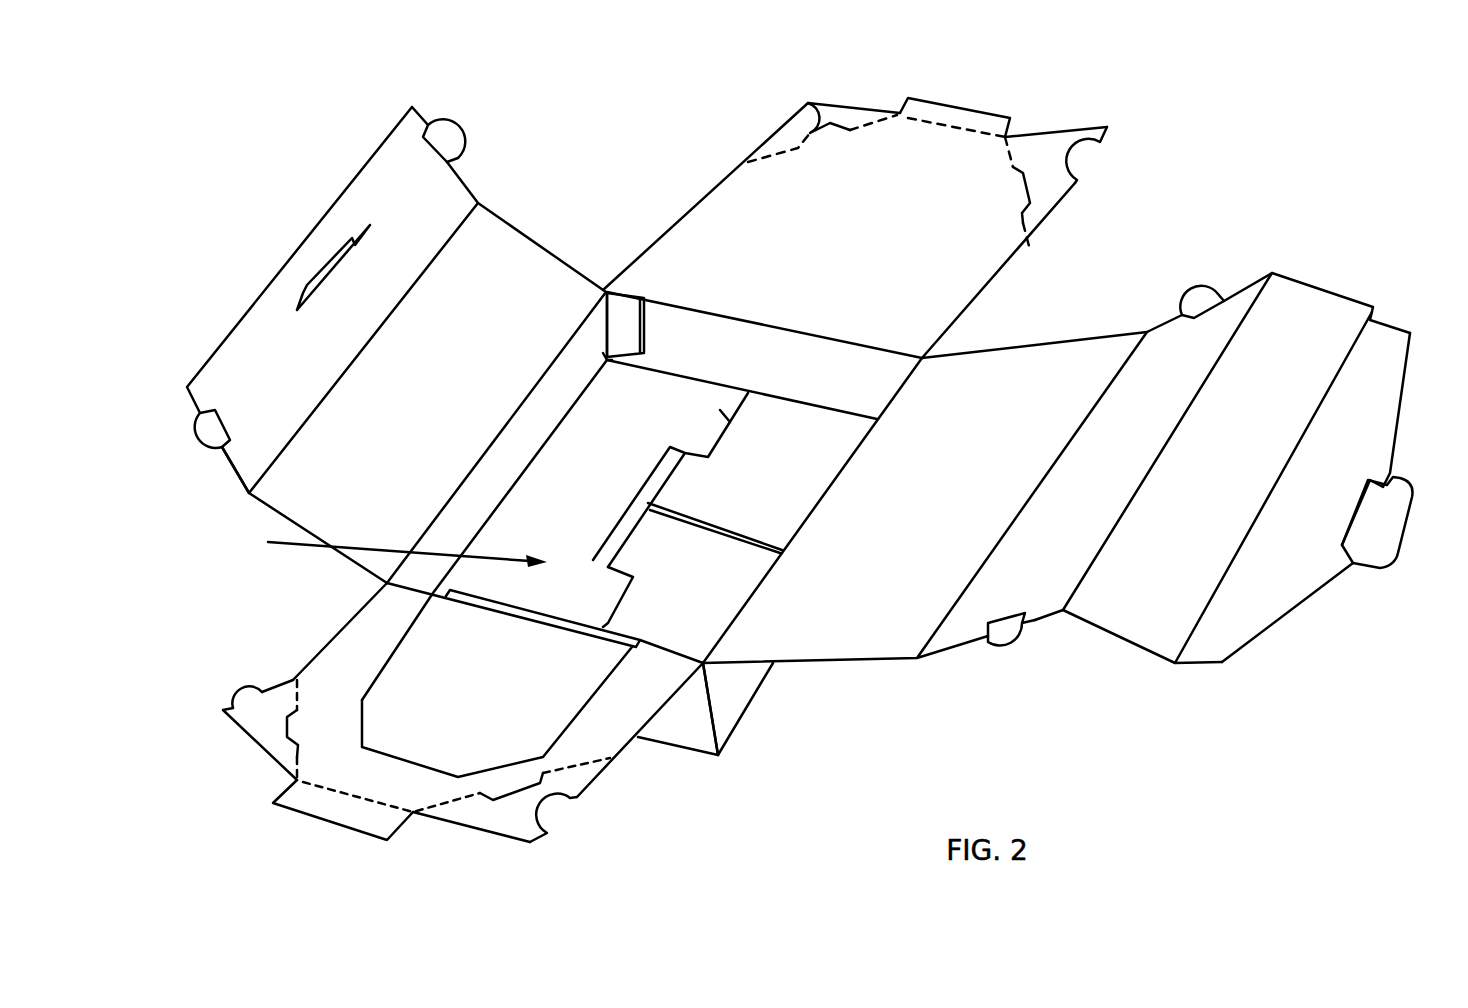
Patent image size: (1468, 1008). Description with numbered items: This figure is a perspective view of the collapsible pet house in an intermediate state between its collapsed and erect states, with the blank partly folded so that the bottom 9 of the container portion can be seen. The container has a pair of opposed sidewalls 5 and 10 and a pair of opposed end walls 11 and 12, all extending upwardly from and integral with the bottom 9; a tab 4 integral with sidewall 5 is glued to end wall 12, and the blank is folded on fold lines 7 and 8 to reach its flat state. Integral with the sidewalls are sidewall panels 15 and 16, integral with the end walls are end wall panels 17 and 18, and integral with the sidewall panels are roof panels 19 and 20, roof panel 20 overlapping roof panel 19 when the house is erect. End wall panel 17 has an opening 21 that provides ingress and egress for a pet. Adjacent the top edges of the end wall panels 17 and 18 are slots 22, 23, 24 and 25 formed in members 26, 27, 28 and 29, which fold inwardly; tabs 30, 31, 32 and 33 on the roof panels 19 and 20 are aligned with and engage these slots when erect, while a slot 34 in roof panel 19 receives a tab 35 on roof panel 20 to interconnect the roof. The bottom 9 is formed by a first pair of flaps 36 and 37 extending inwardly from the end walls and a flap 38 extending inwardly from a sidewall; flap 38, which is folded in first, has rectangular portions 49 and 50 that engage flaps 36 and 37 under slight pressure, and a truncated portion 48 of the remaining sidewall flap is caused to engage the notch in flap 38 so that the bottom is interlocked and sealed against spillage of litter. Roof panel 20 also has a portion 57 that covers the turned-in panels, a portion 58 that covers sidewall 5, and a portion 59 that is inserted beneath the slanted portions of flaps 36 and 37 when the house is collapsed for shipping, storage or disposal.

The tab 4 is at (627, 323).
The sidewall 5 is at (602, 360).
The fold line 7 is at (708, 717).
The fold line 8 is at (604, 340).
The bottom 9 is at (397, 546).
The sidewall 10 is at (752, 680).
The end wall 11 is at (672, 715).
The end wall 12 is at (872, 375).
The sidewall panel 15 is at (1035, 360).
The sidewall panel 16 is at (511, 242).
The end wall panel 17 is at (595, 748).
The end wall panel 18 is at (725, 227).
The roof panel 19 is at (248, 465).
The roof panel 20 is at (1268, 255).
The opening 21 is at (435, 742).
The slot 22 is at (252, 737).
The slot 23 is at (502, 797).
The slot 24 is at (1027, 187).
The slot 25 is at (808, 103).
The member 26 is at (280, 708).
The member 27 is at (530, 823).
The member 28 is at (1045, 143).
The member 29 is at (833, 110).
The tab 30 is at (443, 143).
The tab 31 is at (203, 432).
The tab 32 is at (997, 640).
The tab 33 is at (1200, 296).
The slot 34 is at (302, 277).
The tab 35 is at (1380, 528).
The flap 36 is at (654, 591).
The flap 37 is at (715, 505).
The flap 38 is at (484, 530).
The truncated portion 48 is at (650, 500).
The rectangular portion 49 is at (730, 422).
The rectangular portion 50 is at (608, 592).
The portion of roof panel 57 is at (1042, 597).
The portion of roof panel 58 is at (1120, 612).
The portion of roof panel 59 is at (1253, 617).